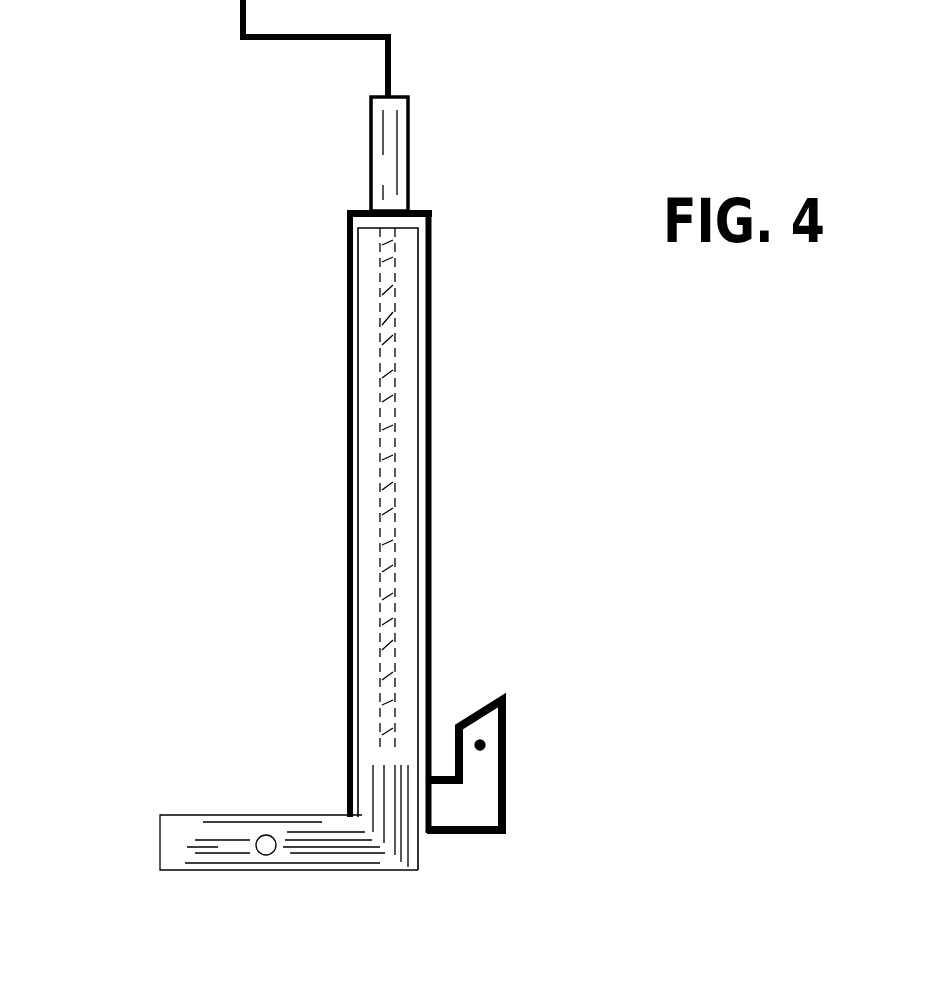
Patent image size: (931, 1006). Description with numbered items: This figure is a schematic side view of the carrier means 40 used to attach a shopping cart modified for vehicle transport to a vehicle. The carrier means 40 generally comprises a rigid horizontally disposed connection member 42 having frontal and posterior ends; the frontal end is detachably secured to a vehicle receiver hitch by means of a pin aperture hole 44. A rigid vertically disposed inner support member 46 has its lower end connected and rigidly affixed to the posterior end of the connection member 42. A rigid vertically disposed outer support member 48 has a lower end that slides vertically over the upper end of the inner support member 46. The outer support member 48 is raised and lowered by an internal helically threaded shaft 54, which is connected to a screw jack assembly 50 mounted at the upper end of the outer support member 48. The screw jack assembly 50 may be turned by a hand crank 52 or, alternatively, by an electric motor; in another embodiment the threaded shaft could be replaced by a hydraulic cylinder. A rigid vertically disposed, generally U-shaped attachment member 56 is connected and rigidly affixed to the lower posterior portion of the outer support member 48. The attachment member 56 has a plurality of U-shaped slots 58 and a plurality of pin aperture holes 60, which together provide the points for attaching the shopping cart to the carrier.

The carrier means 40 is at (265, 362).
The connection member 42 is at (182, 846).
The pin aperture hole 44 is at (256, 840).
The inner support member 46 is at (370, 780).
The outer support member 48 is at (348, 559).
The screw jack assembly 50 is at (383, 177).
The hand crank 52 is at (243, 40).
The internal helically threaded shaft 54 is at (392, 485).
The U shaped attachment member 56 is at (500, 815).
The U shaped slots 58 is at (442, 733).
The pin aperture holes 60 is at (482, 747).